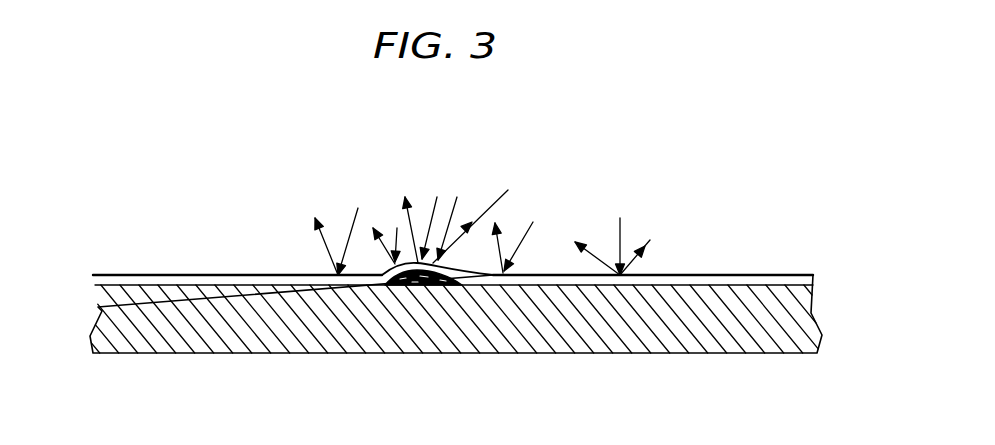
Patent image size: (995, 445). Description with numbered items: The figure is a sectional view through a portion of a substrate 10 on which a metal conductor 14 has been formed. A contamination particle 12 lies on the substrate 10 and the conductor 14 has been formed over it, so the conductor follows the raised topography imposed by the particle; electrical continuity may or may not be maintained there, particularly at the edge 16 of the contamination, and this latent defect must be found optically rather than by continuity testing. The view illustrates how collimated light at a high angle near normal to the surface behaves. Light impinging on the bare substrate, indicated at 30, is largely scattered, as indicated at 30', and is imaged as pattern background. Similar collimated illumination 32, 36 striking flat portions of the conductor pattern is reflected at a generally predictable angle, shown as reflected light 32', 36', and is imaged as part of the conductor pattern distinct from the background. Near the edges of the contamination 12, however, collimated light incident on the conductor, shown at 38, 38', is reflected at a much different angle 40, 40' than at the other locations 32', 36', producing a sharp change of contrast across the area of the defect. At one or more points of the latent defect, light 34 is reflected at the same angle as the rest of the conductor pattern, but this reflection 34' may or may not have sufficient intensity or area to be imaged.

The substrate 10 is at (755, 355).
The contamination particle 12 is at (403, 287).
The metal conductor 14 is at (763, 276).
The edge 16 is at (500, 290).
The incident light 30 is at (632, 215).
The scattered light 30' is at (639, 214).
The collimated illumination 32 is at (542, 228).
The reflected light 32' is at (517, 227).
The light 34 is at (442, 209).
The reflection 34' is at (425, 199).
The collimated illumination 36 is at (330, 211).
The reflected light 36' is at (291, 243).
The collimated light incident near contamination edge 38 is at (470, 211).
The collimated light incident near contamination edge 38' is at (391, 211).
The reflected light at different angle 40 is at (483, 202).
The reflected light at different angle 40' is at (374, 202).